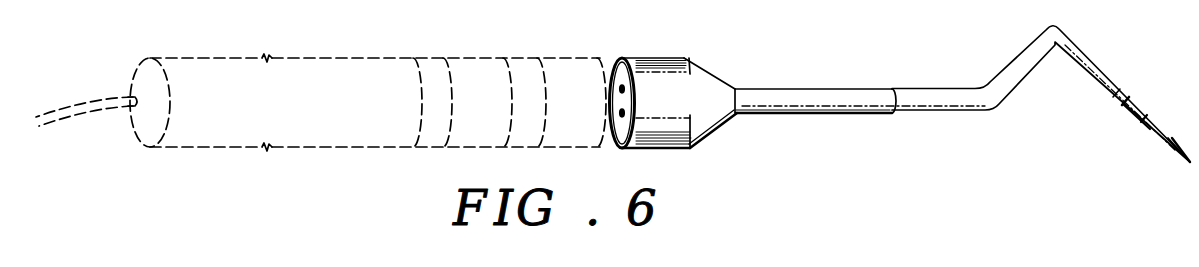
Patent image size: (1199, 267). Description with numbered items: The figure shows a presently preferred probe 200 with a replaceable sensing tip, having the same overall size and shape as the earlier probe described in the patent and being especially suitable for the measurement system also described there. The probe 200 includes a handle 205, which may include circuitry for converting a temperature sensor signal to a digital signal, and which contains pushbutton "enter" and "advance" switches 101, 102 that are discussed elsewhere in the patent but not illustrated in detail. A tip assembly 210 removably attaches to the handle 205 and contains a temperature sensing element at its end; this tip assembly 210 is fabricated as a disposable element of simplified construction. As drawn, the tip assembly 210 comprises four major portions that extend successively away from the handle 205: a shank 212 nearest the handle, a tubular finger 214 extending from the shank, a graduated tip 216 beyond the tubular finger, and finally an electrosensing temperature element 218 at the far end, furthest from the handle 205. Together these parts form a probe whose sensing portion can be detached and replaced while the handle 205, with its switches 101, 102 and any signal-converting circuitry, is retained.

The enter switch 101 is at (517, 58).
The advance switch 102 is at (423, 58).
The probe 200 is at (614, 30).
The handle 205 is at (298, 113).
The tip assembly 210 is at (730, 72).
The shank 212 is at (712, 131).
The tubular finger 214 is at (933, 93).
The graduated tip 216 is at (1137, 103).
The electrosensing temperature element 218 is at (1185, 165).